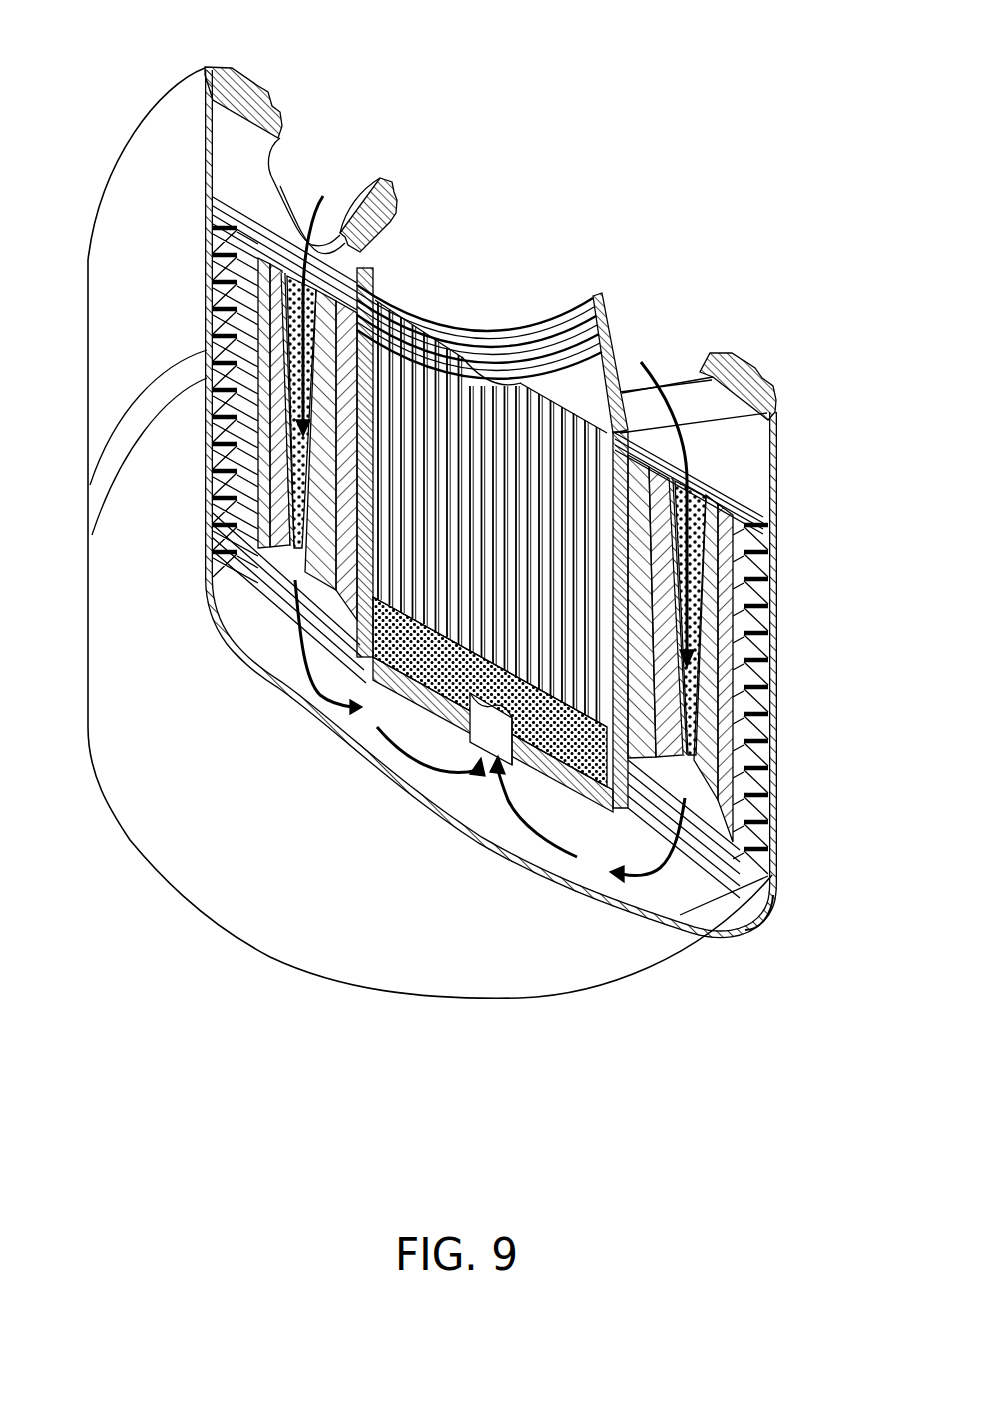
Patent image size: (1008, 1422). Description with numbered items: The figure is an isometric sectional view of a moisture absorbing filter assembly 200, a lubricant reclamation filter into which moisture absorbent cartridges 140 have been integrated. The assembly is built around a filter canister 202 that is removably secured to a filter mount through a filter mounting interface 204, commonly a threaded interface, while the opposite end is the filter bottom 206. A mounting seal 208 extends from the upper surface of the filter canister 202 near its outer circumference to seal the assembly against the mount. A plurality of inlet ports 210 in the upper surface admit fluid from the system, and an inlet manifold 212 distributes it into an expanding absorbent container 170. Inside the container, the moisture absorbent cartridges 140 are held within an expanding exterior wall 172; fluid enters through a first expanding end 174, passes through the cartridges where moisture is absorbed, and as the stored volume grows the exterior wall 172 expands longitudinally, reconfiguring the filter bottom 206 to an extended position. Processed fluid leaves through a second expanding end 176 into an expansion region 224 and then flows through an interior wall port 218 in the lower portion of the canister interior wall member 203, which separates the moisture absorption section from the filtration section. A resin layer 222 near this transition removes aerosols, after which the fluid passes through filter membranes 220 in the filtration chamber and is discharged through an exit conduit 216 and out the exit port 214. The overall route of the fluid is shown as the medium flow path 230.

The moisture absorbing filter assembly 200 is at (649, 170).
The filter canister 202 is at (748, 490).
The canister interior wall member 203 is at (370, 660).
The filter mounting interface 204 is at (393, 217).
The filter bottom 206 is at (300, 940).
The mounting seal 208 is at (235, 74).
The inlet ports 210 is at (285, 198).
The inlet manifold 212 is at (227, 167).
The exit port 214 is at (483, 305).
The exit conduit 216 is at (462, 440).
The interior wall port 218 is at (490, 740).
The filter membranes 220 is at (458, 372).
The resin layer 222 is at (586, 735).
The expansion region 224 is at (735, 918).
The medium flow path 230 is at (293, 655).
The moisture absorbent cartridge 140 is at (765, 692).
The expanding absorbent container 170 is at (748, 601).
The expanding exterior wall 172 is at (770, 794).
The first expanding end 174 is at (703, 478).
The second expanding end 176 is at (693, 918).